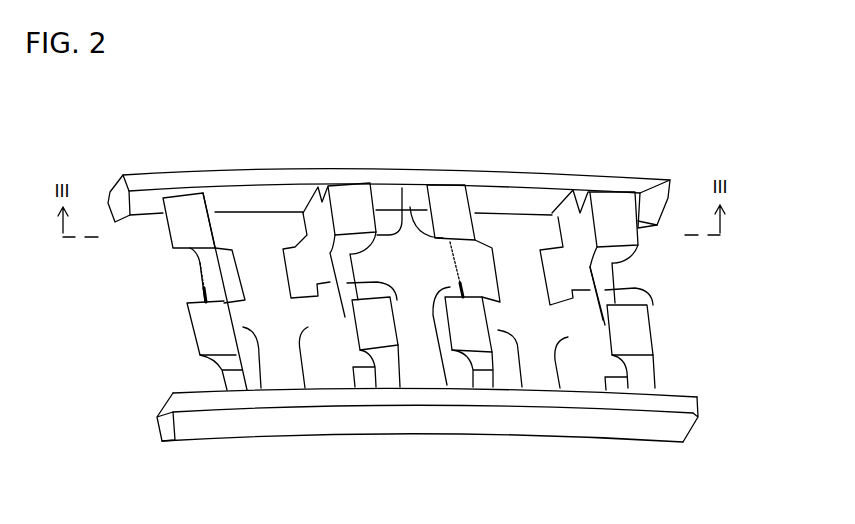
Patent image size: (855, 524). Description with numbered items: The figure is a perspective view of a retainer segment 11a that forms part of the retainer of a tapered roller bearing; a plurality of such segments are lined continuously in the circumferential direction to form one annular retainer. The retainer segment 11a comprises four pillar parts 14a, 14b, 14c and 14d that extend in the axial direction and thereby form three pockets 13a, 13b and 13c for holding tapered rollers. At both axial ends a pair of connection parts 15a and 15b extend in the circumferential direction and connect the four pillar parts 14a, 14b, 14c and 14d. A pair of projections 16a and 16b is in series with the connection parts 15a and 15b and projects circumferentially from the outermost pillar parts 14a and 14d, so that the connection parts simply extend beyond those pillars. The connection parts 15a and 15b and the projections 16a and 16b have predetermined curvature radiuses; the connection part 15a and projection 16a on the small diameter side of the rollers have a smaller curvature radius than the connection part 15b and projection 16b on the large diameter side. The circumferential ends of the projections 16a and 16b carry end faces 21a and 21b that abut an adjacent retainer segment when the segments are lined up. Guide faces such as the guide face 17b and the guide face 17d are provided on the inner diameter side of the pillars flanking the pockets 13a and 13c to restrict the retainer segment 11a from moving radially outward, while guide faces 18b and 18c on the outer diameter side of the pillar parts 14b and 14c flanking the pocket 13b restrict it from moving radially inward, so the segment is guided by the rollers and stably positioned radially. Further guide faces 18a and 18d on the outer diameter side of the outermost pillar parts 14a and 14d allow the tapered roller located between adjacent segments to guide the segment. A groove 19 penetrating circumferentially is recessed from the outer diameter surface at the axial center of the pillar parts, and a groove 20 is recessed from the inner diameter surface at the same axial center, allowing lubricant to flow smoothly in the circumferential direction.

The retainer segment 11a is at (626, 76).
The pocket 13a is at (270, 263).
The pocket 13b is at (405, 263).
The pocket 13c is at (517, 267).
The pillar part 14a is at (188, 208).
The pillar part 14b is at (347, 203).
The pillar part 14c is at (450, 203).
The pillar part 14d is at (608, 210).
The connection part 15a is at (282, 397).
The connection part 15b is at (232, 175).
The projection 16a is at (193, 403).
The projection 16b is at (149, 183).
The guide face 17b is at (290, 210).
The guide face 17d is at (549, 262).
The guide face 18a is at (190, 250).
The guide face 18b is at (376, 192).
The guide face 18c is at (417, 205).
The guide face 18d is at (632, 247).
The groove 19 is at (212, 288).
The groove 20 is at (256, 392).
The end face 21a is at (157, 417).
The end face 21b is at (110, 194).